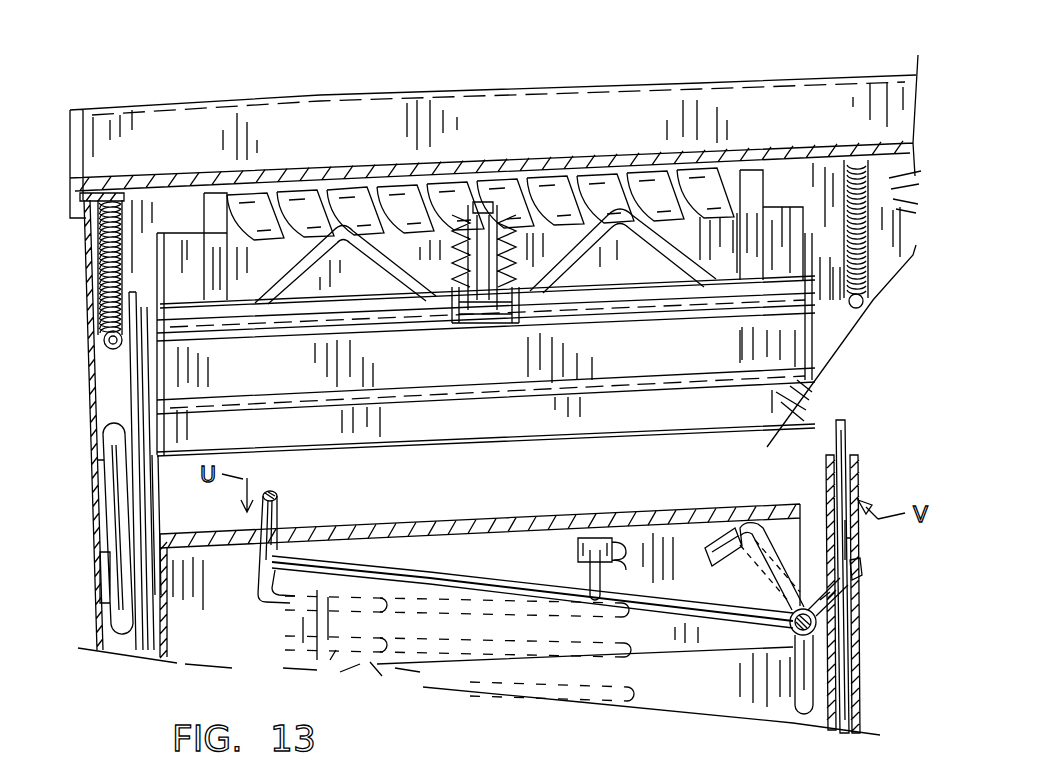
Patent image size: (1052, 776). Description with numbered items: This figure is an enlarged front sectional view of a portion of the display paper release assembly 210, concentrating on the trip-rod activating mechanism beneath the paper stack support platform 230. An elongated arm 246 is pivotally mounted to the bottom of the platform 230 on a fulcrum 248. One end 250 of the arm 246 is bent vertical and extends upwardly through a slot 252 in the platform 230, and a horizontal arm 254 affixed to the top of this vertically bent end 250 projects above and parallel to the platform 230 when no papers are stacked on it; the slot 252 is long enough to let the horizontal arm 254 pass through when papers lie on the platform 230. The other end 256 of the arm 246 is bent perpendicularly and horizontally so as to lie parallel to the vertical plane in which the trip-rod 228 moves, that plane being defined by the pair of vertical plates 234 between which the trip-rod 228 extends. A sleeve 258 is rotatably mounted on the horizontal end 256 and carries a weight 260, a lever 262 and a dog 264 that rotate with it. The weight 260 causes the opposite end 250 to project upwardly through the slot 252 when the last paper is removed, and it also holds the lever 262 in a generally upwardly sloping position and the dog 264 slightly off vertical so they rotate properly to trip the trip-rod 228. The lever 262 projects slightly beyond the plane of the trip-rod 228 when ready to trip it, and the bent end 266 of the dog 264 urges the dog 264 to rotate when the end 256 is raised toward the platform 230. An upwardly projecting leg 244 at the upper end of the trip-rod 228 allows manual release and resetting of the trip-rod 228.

The display paper release assembly 210 is at (700, 686).
The trip-rod 228 is at (860, 660).
The paper stack support platform 230 is at (480, 522).
The vertical plates 234 is at (866, 705).
The upwardly projecting leg 244 is at (846, 438).
The elongated arm 246 is at (343, 558).
The fulcrum 248 is at (600, 532).
The vertically bent end of arm 250 is at (278, 512).
The slot 252 is at (250, 535).
The horizontal arm 254 is at (278, 494).
The horizontal end of arm 256 is at (797, 627).
The sleeve 258 is at (816, 630).
The weight 260 is at (808, 685).
The lever 262 is at (862, 568).
The dog 264 is at (808, 580).
The bent end of dog 266 is at (745, 527).